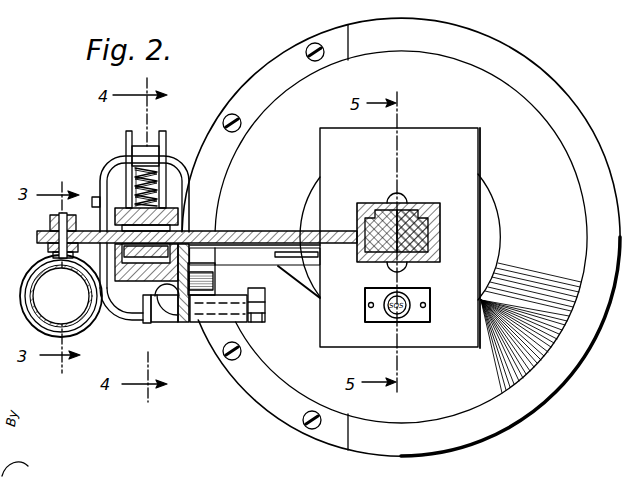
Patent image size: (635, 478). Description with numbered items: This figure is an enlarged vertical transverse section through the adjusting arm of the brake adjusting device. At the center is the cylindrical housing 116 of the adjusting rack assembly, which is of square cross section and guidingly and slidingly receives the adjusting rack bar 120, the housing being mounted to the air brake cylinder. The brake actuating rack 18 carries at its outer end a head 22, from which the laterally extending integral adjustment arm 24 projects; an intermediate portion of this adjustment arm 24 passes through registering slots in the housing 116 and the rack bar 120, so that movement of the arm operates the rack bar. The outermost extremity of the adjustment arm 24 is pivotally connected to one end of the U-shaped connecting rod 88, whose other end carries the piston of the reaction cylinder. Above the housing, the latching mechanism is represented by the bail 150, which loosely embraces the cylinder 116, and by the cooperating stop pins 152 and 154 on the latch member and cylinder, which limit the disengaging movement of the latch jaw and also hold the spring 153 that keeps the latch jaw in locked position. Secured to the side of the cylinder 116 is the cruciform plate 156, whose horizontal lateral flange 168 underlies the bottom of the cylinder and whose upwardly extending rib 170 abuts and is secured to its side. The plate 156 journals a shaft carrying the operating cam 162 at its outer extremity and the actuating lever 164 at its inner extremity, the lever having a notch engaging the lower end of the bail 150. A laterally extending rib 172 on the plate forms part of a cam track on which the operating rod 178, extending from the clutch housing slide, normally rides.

The brake actuating rack 18 is at (386, 222).
The head 22 is at (407, 211).
The adjustment arm 24 is at (250, 233).
The U-shaped connecting rod 88 is at (50, 226).
The cylindrical housing 116 is at (172, 220).
The adjusting rack bar 120 is at (112, 270).
The bail 150 is at (106, 166).
The stop pin 152 is at (162, 165).
The spring 153 is at (150, 180).
The stop pin 154 is at (138, 193).
The plate 156 is at (191, 322).
The operating cam 162 is at (258, 312).
The actuating lever 164 is at (146, 323).
The horizontal lateral flange 168 is at (133, 298).
The upwardly extending rib 170 is at (190, 254).
The laterally extending rib 172 is at (215, 270).
The operating rod 178 is at (262, 256).